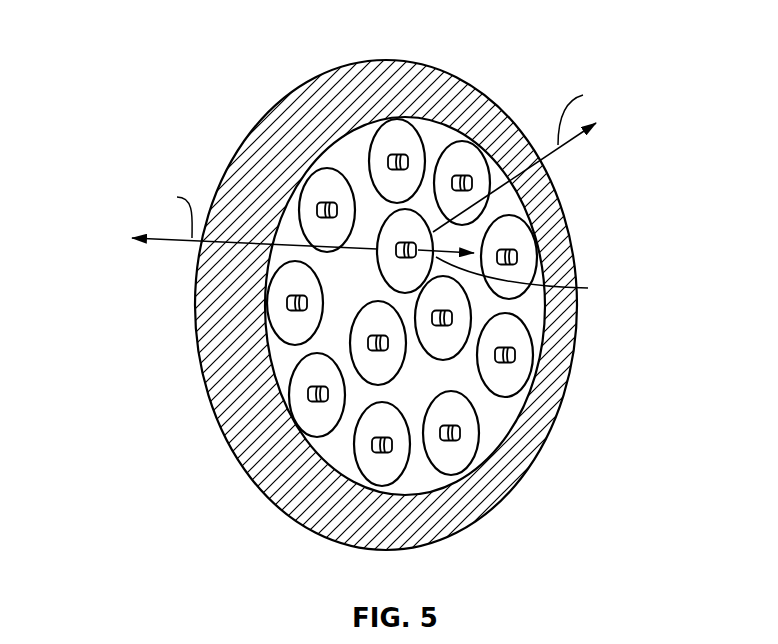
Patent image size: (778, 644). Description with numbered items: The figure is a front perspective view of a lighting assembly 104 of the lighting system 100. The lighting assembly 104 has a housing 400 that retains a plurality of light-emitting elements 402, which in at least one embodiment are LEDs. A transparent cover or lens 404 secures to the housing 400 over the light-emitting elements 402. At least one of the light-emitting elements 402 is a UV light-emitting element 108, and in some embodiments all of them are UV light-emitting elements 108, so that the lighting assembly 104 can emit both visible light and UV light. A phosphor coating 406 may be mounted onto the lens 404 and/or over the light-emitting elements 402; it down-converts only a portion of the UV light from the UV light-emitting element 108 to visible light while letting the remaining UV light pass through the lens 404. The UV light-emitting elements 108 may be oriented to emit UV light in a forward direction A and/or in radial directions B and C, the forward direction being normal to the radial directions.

The lighting system 100 is at (188, 62).
The lighting assembly 104 is at (528, 101).
The UV light-emitting element 108 is at (377, 265).
The housing 400 is at (575, 258).
The light-emitting elements 402 is at (527, 338).
The lens 404 is at (412, 140).
The phosphor coating 406 is at (523, 218).